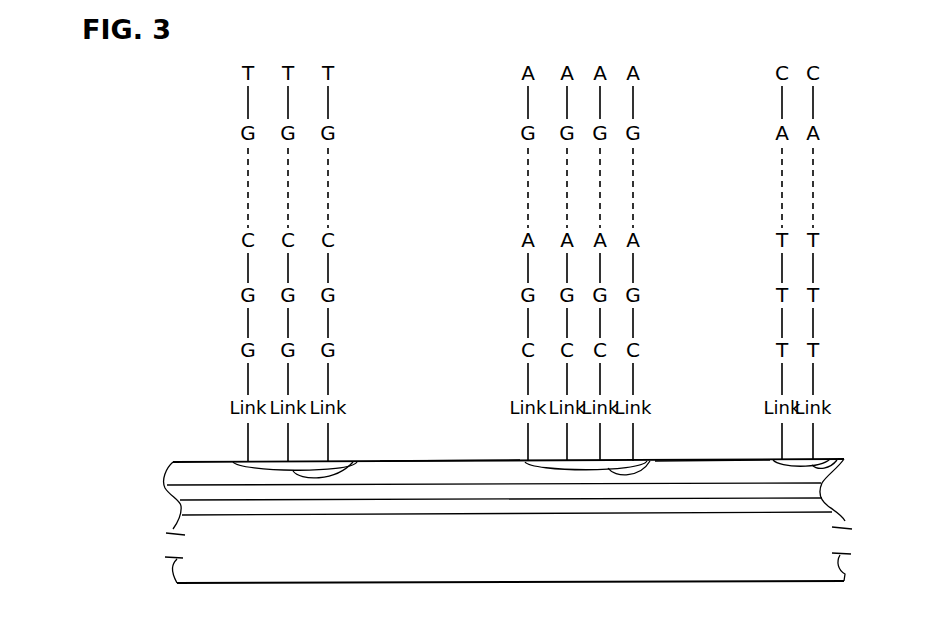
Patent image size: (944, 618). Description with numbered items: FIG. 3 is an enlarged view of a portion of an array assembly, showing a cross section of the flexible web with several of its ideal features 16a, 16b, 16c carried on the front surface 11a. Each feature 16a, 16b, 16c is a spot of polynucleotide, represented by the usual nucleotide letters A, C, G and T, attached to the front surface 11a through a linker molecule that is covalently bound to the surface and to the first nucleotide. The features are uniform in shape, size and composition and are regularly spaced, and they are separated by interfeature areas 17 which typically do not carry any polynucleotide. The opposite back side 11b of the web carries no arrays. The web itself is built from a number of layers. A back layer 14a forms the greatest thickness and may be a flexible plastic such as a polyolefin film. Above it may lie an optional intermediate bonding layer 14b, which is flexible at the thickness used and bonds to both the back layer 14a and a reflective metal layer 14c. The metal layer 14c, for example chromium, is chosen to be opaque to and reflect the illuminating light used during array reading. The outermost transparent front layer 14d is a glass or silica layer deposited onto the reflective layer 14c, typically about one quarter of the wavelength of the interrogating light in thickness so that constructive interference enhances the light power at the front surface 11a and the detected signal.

The front surface 11a is at (202, 462).
The back side 11b is at (193, 590).
The back layer 14a is at (230, 557).
The bonding layer 14b is at (195, 512).
The reflective metal layer 14c is at (190, 493).
The transparent front layer 14d is at (167, 465).
The feature 16a is at (353, 462).
The feature 16b is at (650, 461).
The feature 16c is at (836, 458).
The interfeature area 17 is at (455, 460).